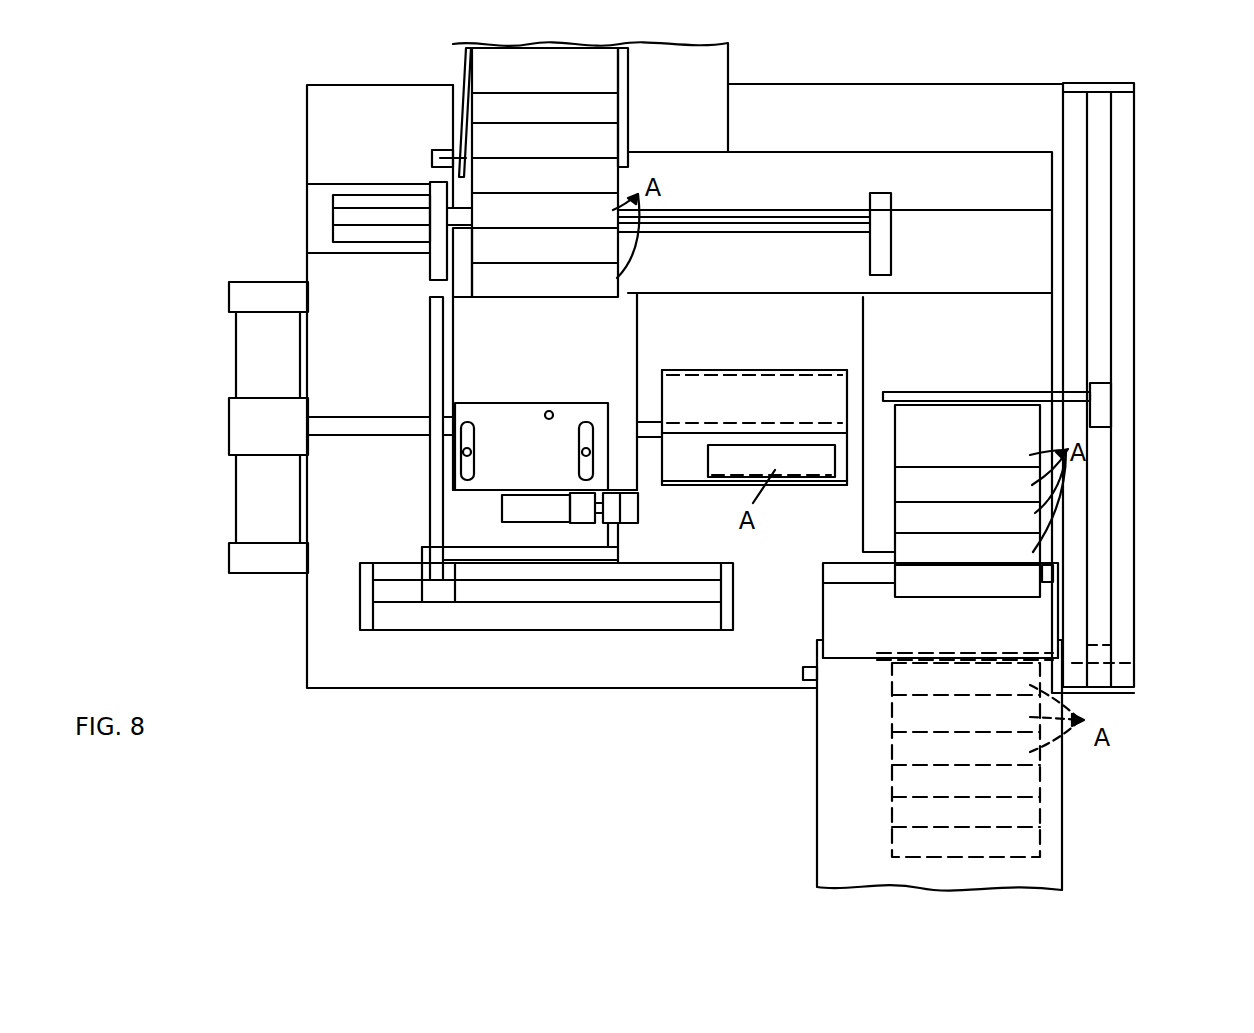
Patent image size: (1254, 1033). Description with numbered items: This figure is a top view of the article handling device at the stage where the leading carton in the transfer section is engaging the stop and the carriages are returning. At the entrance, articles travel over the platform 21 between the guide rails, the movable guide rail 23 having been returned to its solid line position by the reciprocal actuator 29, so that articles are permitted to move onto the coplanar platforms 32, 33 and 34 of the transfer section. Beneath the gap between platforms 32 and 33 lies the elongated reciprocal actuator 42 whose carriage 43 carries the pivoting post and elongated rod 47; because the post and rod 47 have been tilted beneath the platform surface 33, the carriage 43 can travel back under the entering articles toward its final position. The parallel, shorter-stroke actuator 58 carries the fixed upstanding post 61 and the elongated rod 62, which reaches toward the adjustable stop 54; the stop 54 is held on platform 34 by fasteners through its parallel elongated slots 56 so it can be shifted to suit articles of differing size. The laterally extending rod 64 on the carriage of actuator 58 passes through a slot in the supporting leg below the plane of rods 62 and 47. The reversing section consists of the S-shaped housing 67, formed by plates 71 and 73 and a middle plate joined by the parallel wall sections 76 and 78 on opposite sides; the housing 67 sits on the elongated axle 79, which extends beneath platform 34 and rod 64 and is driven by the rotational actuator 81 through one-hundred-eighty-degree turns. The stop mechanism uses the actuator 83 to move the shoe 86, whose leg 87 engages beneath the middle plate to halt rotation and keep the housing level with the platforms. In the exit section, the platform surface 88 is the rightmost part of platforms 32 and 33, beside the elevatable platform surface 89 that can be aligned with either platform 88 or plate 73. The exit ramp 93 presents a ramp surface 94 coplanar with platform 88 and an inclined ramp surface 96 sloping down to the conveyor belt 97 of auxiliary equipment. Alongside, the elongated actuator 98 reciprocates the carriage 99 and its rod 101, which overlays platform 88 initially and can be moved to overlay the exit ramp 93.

The platform 21 is at (590, 169).
The guide rail 23 is at (462, 100).
The reciprocal actuator 29 is at (432, 152).
The platform 32 is at (835, 221).
The platform 33 is at (709, 368).
The platform 34 is at (545, 393).
The elongated reciprocal actuator 42 is at (352, 192).
The carriage 43 is at (383, 243).
The elongated rod 47 is at (432, 278).
The adjustable stop 54 is at (531, 446).
The elongated slots 56 is at (582, 422).
The elongated reciprocal actuator 58 is at (568, 613).
The upstanding post 61 is at (437, 596).
The elongated rod 62 is at (430, 478).
The laterally extending rod 64 is at (613, 540).
The S-shaped housing 67 is at (779, 369).
The plate 71 is at (738, 487).
The plate 73 is at (685, 369).
The wall section 76 is at (850, 478).
The wall section 78 is at (742, 427).
The elongated axle 79 is at (399, 427).
The rotational actuator 81 is at (238, 418).
The actuator 83 is at (552, 508).
The shoe 86 is at (607, 520).
The leg 87 is at (634, 513).
The platform surface 88 is at (1004, 258).
The platform surface 89 is at (1036, 328).
The exit ramp 93 is at (1057, 597).
The ramp surface 94 is at (1053, 578).
The inclined ramp surface 96 is at (1043, 620).
The conveyor belt 97 is at (833, 760).
The elongated actuator 98 is at (1124, 220).
The carriage 99 is at (1105, 395).
The rod 101 is at (998, 391).